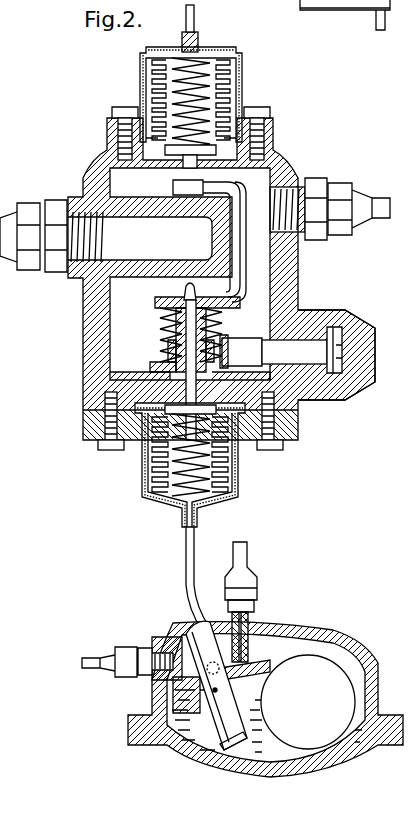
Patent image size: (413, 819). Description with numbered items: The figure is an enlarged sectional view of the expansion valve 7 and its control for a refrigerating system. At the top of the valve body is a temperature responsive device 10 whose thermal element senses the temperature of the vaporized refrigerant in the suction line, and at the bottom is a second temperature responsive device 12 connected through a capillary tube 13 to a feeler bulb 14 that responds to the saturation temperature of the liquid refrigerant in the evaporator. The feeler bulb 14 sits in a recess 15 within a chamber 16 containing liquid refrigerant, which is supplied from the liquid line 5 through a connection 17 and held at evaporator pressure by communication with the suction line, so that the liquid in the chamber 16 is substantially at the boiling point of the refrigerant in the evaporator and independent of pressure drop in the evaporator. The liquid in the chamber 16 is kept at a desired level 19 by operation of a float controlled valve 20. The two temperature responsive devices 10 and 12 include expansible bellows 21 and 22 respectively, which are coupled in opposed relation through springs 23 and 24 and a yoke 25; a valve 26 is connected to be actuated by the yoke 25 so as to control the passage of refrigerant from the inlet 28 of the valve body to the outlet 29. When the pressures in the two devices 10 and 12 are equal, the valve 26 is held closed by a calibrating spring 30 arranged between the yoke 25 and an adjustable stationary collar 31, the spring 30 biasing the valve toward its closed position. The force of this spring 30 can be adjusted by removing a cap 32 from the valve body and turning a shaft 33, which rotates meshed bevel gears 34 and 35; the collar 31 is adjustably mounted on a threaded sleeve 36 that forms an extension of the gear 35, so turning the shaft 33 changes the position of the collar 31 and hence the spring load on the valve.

The liquid line 5 is at (380, 206).
The expansion valve 7 is at (76, 149).
The temperature responsive device 10 is at (259, 88).
The temperature responsive device 12 is at (259, 481).
The capillary tube 13 is at (185, 548).
The feeler bulb 14 is at (180, 641).
The recess 15 is at (205, 694).
The chamber 16 is at (294, 626).
The connection 17 is at (250, 549).
The liquid level 19 is at (375, 666).
The float controlled valve 20 is at (247, 668).
The bellows 21 is at (152, 79).
The bellows 22 is at (150, 458).
The spring 23 is at (168, 92).
The spring 24 is at (175, 472).
The yoke 25 is at (242, 294).
The valve 26 is at (182, 295).
The inlet 28 is at (300, 243).
The outlet 29 is at (95, 240).
The calibrating spring 30 is at (162, 318).
The adjustable stationary collar 31 is at (166, 346).
The cap 32 is at (343, 320).
The shaft 33 is at (312, 385).
The bevel gear 34 is at (228, 346).
The bevel gear 35 is at (170, 367).
The threaded sleeve 36 is at (232, 356).